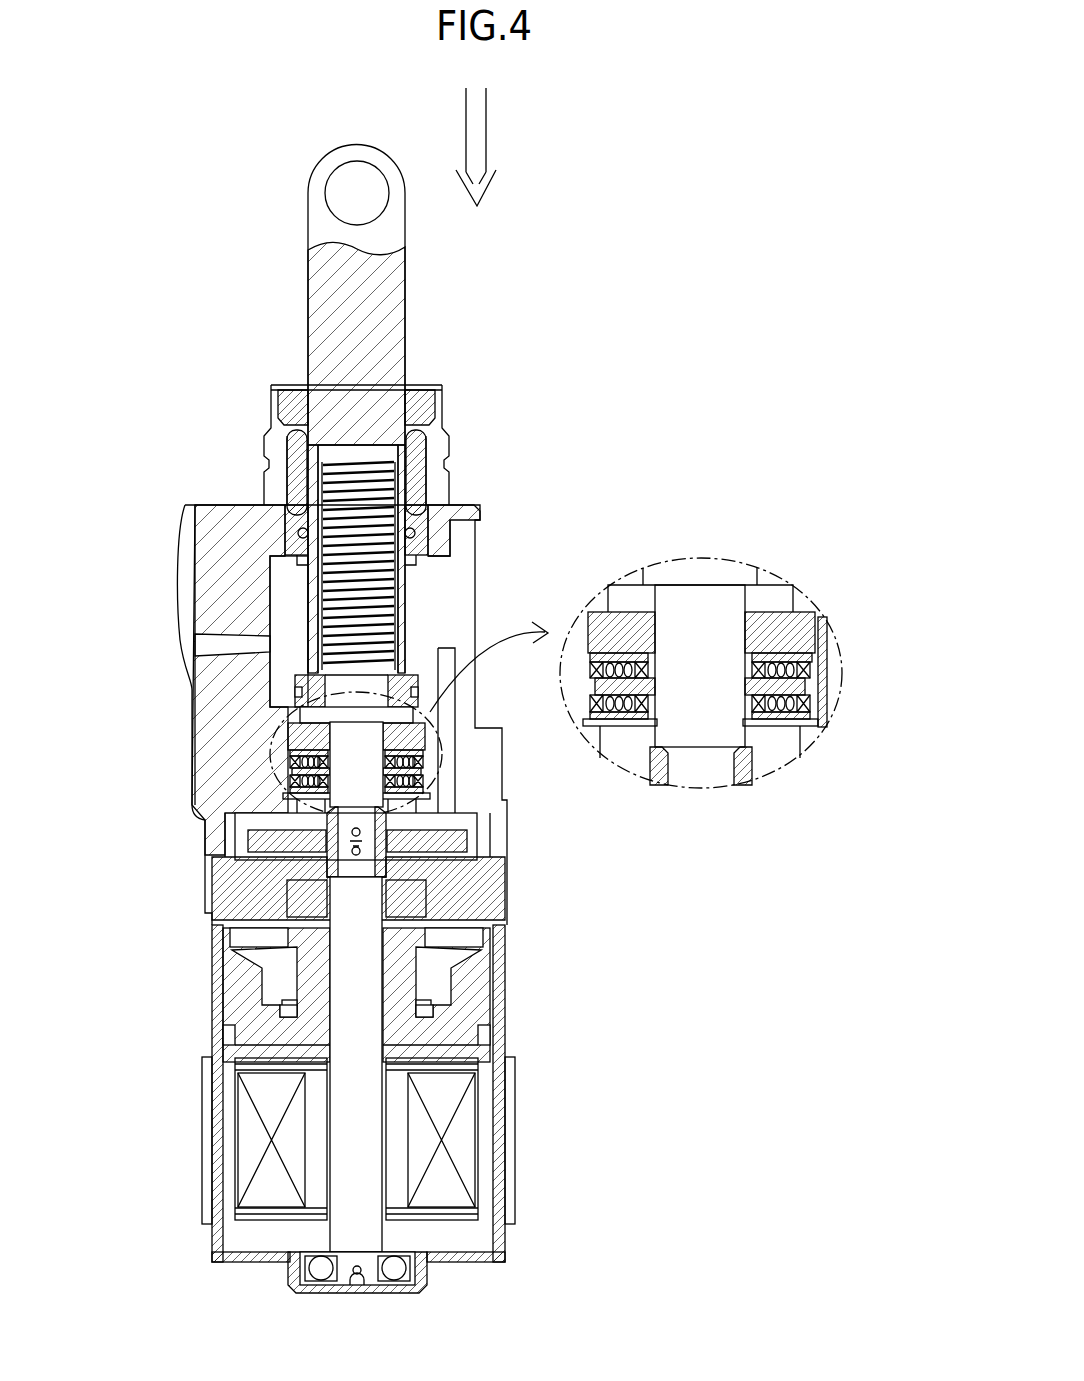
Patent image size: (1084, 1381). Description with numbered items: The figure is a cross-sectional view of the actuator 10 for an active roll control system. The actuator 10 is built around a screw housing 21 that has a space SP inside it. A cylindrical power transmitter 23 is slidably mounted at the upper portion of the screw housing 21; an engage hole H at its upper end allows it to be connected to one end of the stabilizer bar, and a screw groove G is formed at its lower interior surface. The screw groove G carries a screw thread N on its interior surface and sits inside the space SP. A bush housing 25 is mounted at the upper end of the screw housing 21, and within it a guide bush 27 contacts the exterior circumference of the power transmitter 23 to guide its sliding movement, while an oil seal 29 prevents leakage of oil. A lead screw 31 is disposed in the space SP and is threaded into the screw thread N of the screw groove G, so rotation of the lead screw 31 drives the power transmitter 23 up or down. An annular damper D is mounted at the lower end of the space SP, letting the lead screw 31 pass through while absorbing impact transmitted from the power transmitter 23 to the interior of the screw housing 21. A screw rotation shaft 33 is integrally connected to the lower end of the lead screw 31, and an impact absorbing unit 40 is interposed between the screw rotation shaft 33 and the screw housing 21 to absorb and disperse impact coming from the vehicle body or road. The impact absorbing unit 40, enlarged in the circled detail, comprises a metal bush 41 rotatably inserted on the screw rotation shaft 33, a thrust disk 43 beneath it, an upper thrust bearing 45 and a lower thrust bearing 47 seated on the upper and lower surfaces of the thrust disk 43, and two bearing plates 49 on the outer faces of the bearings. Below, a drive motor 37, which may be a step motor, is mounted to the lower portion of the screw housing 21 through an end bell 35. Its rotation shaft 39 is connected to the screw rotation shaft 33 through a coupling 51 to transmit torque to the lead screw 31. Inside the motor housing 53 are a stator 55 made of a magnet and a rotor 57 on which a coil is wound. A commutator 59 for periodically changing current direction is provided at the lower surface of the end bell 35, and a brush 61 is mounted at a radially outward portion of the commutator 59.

The actuator 10 is at (565, 955).
The screw housing 21 is at (215, 525).
The power transmitter 23 is at (385, 303).
The bush housing 25 is at (272, 470).
The guide bush 27 is at (440, 390).
The oil seal 29 is at (420, 447).
The lead screw 31 is at (335, 607).
The screw rotation shaft 33 is at (345, 760).
The end bell 35 is at (225, 892).
The drive motor 37 is at (174, 1065).
The rotation shaft 39 is at (355, 1122).
The impact absorbing unit 40 is at (764, 596).
The metal bush 41 is at (800, 620).
The thrust disk 43 is at (805, 682).
The upper thrust bearing 45 is at (810, 665).
The lower thrust bearing 47 is at (810, 700).
The bearing plate 49 is at (612, 655).
The coupling 51 is at (640, 850).
The motor housing 53 is at (235, 1000).
The stator 55 is at (245, 1147).
The rotor 57 is at (400, 1183).
The commutator 59 is at (405, 1027).
The brush 61 is at (435, 968).
The engage hole H is at (345, 190).
The screw groove G is at (328, 444).
The space SP is at (284, 577).
The damper D is at (305, 690).
The screw thread N is at (392, 636).